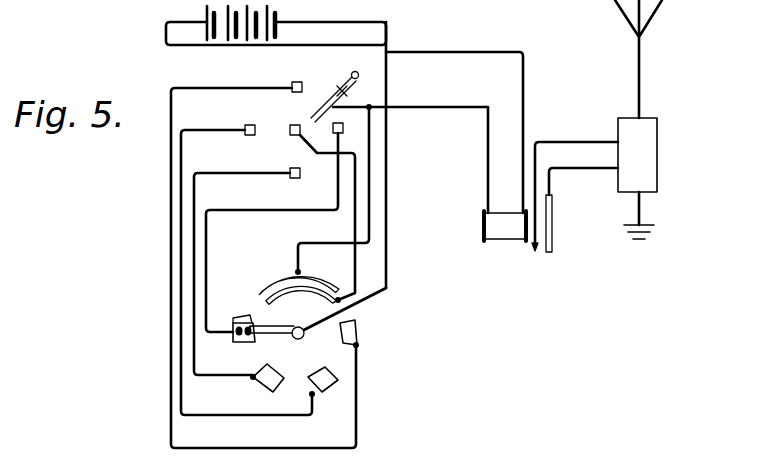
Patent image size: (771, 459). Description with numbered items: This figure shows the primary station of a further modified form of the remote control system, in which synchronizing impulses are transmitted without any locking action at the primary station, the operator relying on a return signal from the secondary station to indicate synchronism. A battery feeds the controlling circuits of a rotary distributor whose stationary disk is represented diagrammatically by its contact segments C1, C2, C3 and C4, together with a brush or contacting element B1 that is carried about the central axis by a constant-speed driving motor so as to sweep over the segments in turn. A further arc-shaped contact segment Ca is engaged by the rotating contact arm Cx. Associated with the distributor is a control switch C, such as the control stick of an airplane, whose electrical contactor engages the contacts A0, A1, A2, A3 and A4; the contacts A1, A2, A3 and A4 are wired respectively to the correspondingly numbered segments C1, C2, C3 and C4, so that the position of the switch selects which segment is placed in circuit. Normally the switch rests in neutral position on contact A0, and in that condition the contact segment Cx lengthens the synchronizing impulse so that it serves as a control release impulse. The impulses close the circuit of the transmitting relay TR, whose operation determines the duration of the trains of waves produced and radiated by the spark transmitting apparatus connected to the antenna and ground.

The contact A1 is at (296, 81).
The contact A2 is at (251, 124).
The contact A3 is at (297, 179).
The contact A4 is at (351, 119).
The neutral contact A0 is at (283, 134).
The control switch C is at (349, 76).
The contact segment Ca is at (272, 278).
The contact segment Cx is at (320, 292).
The brush B1 is at (281, 336).
The contact segment C1 is at (358, 329).
The contact segment C2 is at (324, 387).
The contact segment C3 is at (272, 385).
The contact segment C4 is at (236, 343).
The transmitting relay TR is at (505, 226).